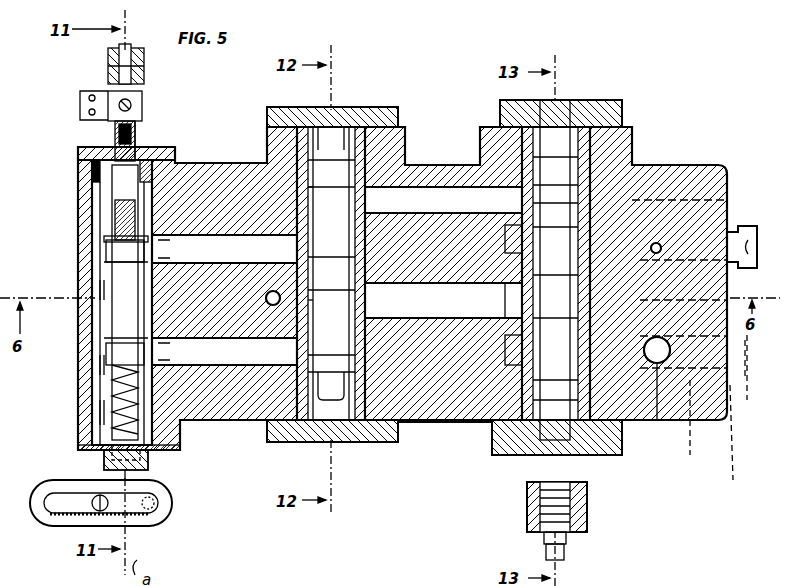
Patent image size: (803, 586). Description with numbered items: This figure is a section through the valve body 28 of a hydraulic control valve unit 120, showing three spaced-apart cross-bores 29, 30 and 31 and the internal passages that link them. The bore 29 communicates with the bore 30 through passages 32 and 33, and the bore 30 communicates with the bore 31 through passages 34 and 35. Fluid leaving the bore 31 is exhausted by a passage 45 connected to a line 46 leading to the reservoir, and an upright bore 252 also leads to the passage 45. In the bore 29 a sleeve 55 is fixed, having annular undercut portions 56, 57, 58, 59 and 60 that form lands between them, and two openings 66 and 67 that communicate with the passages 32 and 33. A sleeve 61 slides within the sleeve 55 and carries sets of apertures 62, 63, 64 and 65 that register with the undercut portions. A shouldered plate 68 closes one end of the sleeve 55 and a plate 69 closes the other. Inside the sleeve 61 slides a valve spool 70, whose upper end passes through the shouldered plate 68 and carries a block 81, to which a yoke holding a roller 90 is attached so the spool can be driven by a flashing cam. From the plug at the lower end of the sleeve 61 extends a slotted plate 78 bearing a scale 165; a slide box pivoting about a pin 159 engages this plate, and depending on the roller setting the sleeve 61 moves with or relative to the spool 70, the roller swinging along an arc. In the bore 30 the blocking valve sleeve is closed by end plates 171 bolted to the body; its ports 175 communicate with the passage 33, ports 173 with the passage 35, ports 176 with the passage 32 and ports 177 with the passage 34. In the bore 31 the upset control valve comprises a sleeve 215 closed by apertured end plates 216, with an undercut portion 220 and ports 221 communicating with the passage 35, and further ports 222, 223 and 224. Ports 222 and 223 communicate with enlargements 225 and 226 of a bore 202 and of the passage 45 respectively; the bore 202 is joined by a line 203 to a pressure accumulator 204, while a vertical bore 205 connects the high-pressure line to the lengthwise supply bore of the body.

The valve body 28 is at (223, 158).
The cross-bore 29 is at (178, 185).
The cross-bore 30 is at (368, 160).
The cross-bore 31 is at (598, 150).
The passage 32 is at (235, 251).
The passage 33 is at (235, 353).
The passage 34 is at (453, 197).
The passage 35 is at (435, 302).
The exhaust passage 45 is at (625, 232).
The line 46 is at (742, 236).
The sleeve 55 is at (96, 172).
The annular undercut portion 56 is at (108, 398).
The annular undercut portion 57 is at (106, 348).
The annular undercut portion 58 is at (100, 288).
The annular undercut portion 59 is at (106, 248).
The annular undercut portion 60 is at (100, 193).
The sleeve 61 is at (160, 410).
The apertures 62 is at (102, 414).
The apertures 63 is at (102, 362).
The apertures 64 is at (108, 303).
The apertures 65 is at (106, 258).
The opening 66 is at (160, 250).
The opening 67 is at (160, 352).
The shouldered plate 68 is at (156, 148).
The plate 69 is at (170, 450).
The valve spool 70 is at (120, 217).
The slotted plate 78 is at (158, 522).
The block 81 is at (135, 104).
The roller 90 is at (125, 48).
The valve unit 120 is at (354, 579).
The pin 159 is at (158, 498).
The scale 165 is at (70, 518).
The end plates 171 is at (372, 107).
The ports 173 is at (360, 302).
The ports 175 is at (366, 338).
The ports 176 is at (358, 250).
The ports 177 is at (360, 192).
The bore 202 is at (694, 430).
The line 203 is at (738, 405).
The pressure accumulator 204 is at (578, 534).
The vertical bore 205 is at (660, 422).
The sleeve 215 is at (478, 420).
The end plates 216 is at (614, 100).
The undercut portion 220 is at (484, 290).
The ports 221 is at (508, 305).
The ports 222 is at (508, 350).
The ports 223 is at (560, 242).
The ports 224 is at (528, 193).
The enlargement 225 is at (476, 388).
The enlargement 226 is at (506, 242).
The upright bore 252 is at (660, 242).